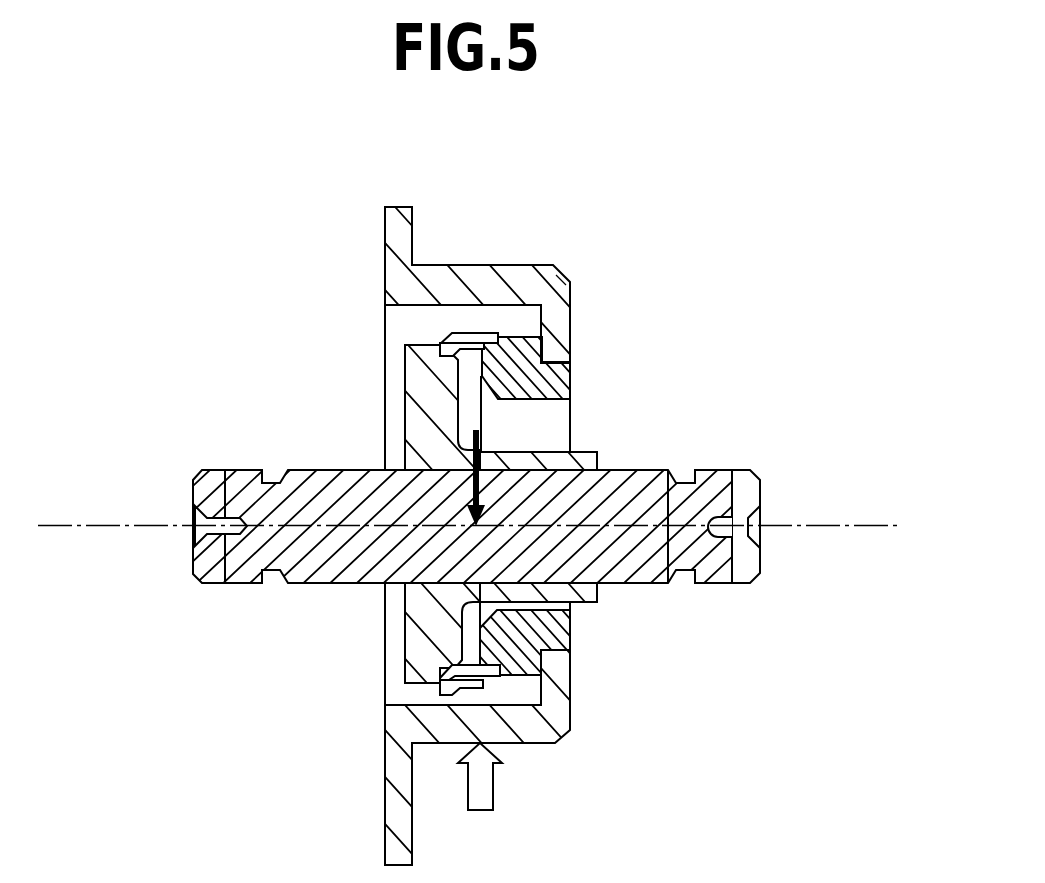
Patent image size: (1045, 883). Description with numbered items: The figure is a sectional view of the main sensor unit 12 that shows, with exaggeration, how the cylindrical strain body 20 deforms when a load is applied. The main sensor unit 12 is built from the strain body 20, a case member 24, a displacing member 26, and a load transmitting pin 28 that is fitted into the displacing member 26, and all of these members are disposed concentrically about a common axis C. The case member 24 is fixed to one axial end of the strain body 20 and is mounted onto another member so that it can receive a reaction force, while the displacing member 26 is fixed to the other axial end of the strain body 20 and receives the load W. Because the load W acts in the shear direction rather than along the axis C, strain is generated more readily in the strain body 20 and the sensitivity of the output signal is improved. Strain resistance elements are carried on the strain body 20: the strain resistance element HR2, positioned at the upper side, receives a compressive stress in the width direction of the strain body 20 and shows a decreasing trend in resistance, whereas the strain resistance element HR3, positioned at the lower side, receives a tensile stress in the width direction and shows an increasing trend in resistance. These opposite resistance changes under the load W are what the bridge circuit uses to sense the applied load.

The main sensor unit 12 is at (669, 299).
The cylindrical strain body 20 is at (493, 333).
The case member 24 is at (558, 257).
The displacing member 26 is at (402, 396).
The load transmitting pin 28 is at (236, 469).
The strain resistance element HR2 is at (450, 343).
The strain resistance element HR3 is at (462, 692).
The load W is at (492, 440).
The axis C is at (877, 525).